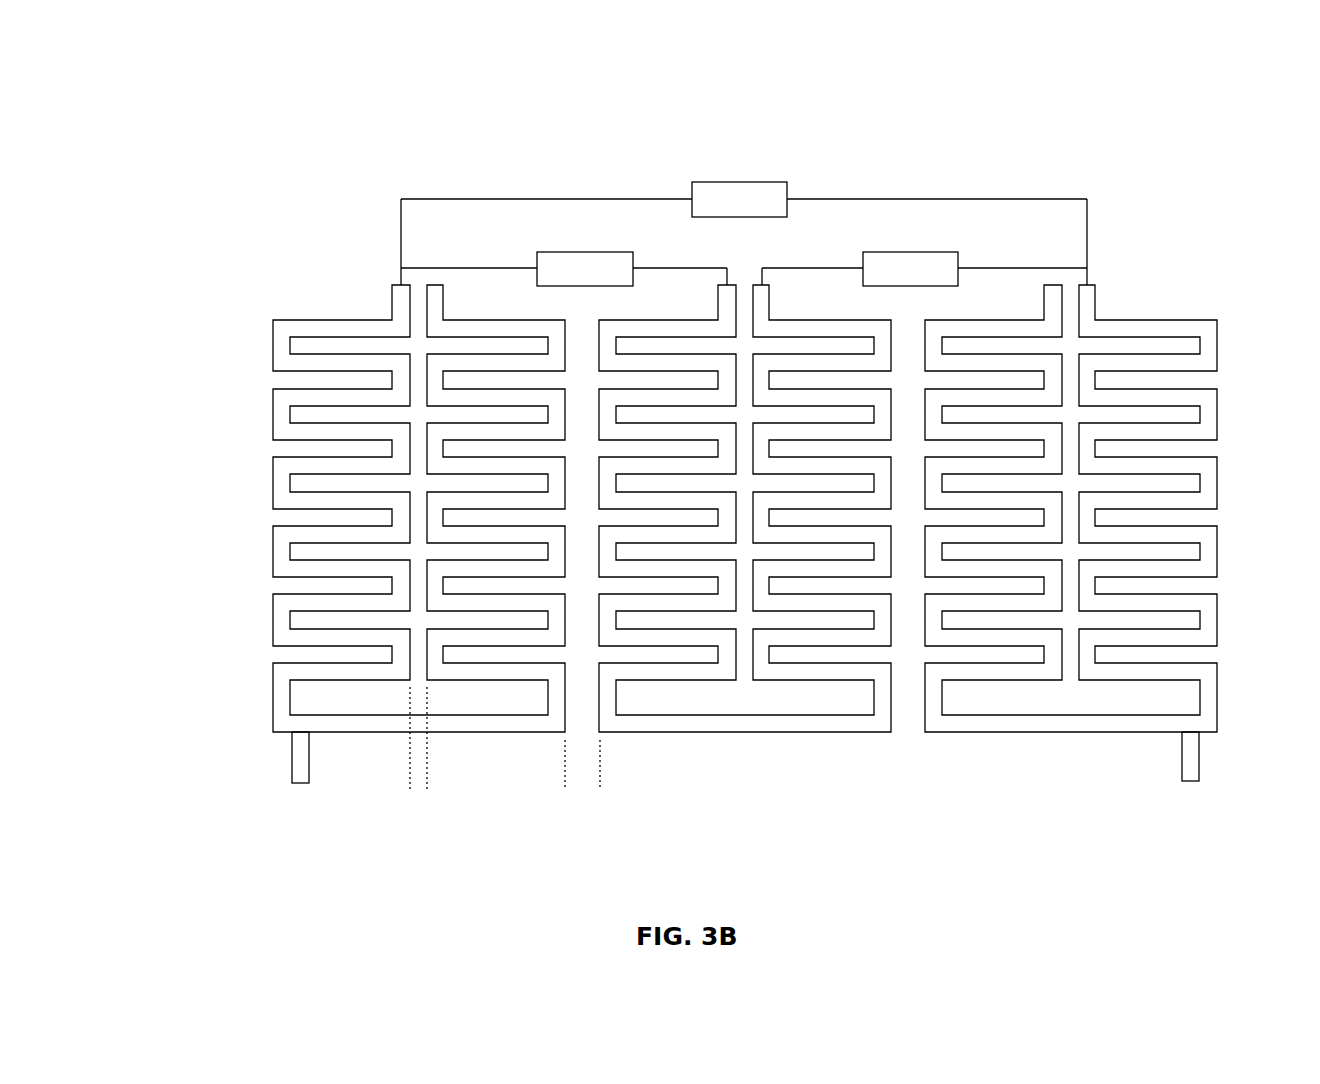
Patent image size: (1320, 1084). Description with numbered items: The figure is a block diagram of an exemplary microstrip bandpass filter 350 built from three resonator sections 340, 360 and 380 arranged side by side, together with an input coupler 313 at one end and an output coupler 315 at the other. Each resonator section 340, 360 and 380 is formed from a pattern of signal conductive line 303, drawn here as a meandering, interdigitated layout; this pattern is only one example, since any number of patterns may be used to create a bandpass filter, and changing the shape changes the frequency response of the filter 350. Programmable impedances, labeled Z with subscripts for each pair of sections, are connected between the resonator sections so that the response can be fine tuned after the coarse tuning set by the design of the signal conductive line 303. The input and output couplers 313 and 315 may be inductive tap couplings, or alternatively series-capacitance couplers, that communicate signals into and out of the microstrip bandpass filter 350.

The microstrip bandpass filter 350 is at (262, 120).
The resonator section 340 is at (303, 280).
The signal conductive line 303 is at (273, 458).
The input coupler 313 is at (292, 756).
The output coupler 315 is at (1200, 755).
The resonator section 360 is at (833, 234).
The resonator section 380 is at (1146, 250).